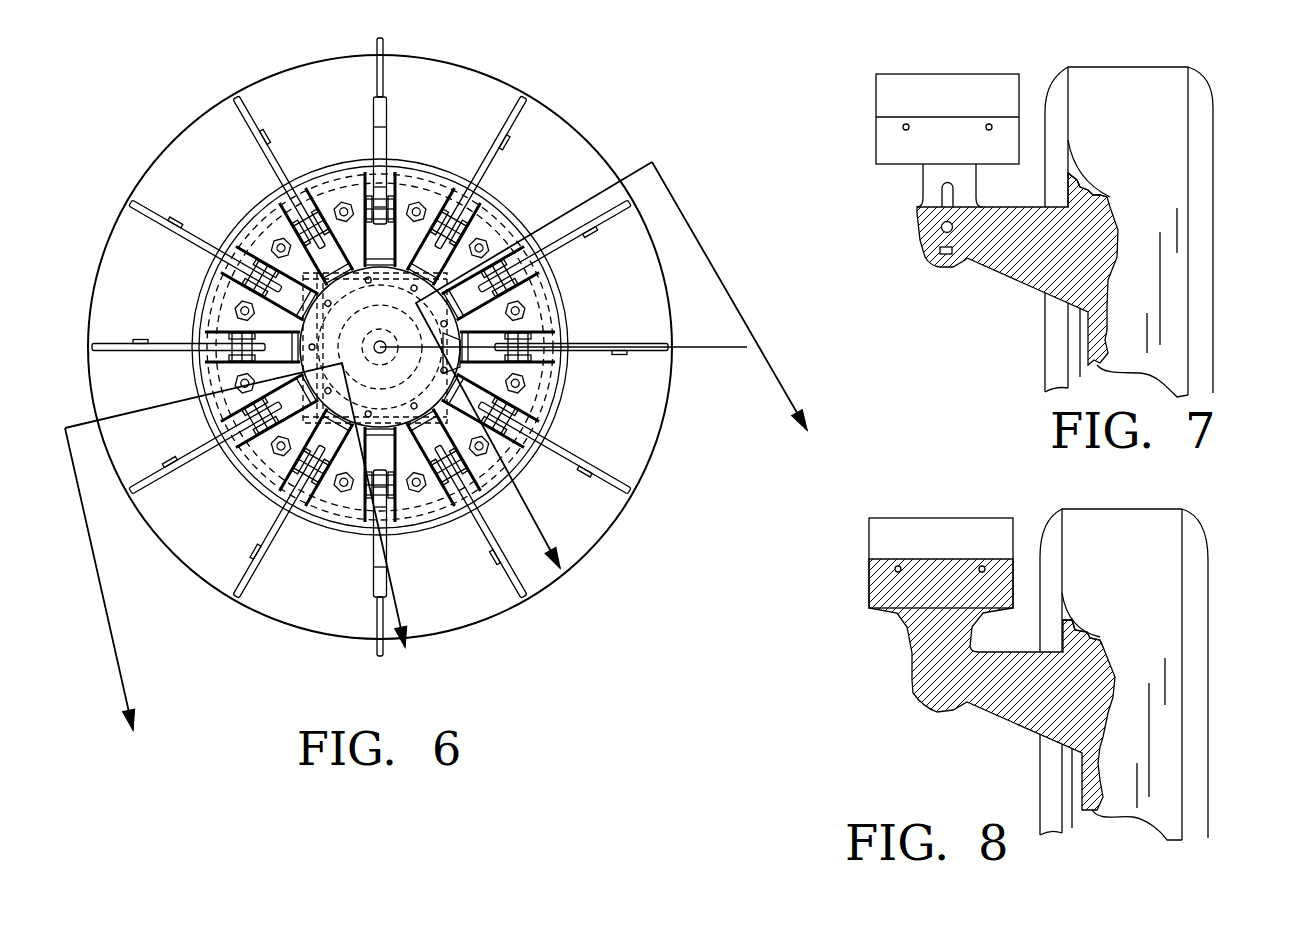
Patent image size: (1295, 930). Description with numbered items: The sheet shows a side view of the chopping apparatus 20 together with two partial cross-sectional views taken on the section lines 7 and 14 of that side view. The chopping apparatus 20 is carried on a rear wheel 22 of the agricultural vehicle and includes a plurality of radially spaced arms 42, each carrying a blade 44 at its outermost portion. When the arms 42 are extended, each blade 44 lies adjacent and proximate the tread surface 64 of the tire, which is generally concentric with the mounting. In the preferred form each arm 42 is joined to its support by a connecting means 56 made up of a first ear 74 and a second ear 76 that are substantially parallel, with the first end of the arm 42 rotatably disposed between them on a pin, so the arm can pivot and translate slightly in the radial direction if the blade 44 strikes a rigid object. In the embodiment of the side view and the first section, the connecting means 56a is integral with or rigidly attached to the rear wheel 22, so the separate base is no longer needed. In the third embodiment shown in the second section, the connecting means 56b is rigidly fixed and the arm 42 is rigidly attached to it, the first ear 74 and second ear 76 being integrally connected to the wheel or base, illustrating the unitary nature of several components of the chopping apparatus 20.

In FIG. 6, the section line 7— 7 is at (617, 365).
In FIG. 6, the section line 14— 14 is at (236, 554).
In FIG. 6, the chopping apparatus 20 is at (519, 124).
In FIG. 6, the rear wheel 22 is at (563, 293).
In FIG. 7, the rear wheel 22 is at (1072, 173).
In FIG. 8, the rear wheel 22 is at (1065, 617).
In FIG. 6, the arm 42 is at (387, 115).
In FIG. 7, the arm 42 is at (1020, 123).
In FIG. 6, the blade 44 is at (383, 77).
In FIG. 7, the blade 44 is at (972, 73).
In FIG. 8, the blade 44 is at (972, 518).
In FIG. 6, the connecting means 56 is at (523, 397).
In FIG. 7, the connecting means 56a is at (1118, 188).
In FIG. 8, the connecting means 56b is at (1105, 625).
In FIG. 7, the tread surface 64 is at (1113, 119).
In FIG. 8, the tread surface 64 is at (1142, 562).
In FIG. 6, the first ear 74 is at (405, 512).
In FIG. 6, the second ear 76 is at (380, 503).
In FIG. 7, the second ear 76 is at (997, 273).